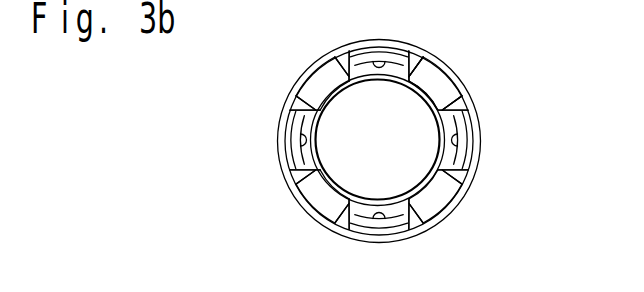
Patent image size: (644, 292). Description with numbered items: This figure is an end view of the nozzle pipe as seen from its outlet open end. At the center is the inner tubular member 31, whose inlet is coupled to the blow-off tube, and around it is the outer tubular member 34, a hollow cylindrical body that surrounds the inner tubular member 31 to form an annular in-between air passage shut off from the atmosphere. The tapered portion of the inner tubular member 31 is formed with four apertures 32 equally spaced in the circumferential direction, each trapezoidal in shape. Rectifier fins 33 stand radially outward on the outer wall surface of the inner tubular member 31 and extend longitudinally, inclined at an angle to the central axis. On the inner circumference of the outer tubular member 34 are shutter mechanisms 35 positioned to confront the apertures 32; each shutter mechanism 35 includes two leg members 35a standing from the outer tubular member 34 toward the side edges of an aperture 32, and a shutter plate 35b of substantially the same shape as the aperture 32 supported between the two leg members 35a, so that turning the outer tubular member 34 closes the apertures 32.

The inner tubular member 31 is at (448, 155).
The aperture 32 is at (375, 63).
The rectifier fin 33 is at (408, 66).
The outer tubular member 34 is at (463, 195).
The shutter mechanism 35 is at (340, 73).
The leg member 35a is at (424, 64).
The shutter plate 35b is at (427, 93).